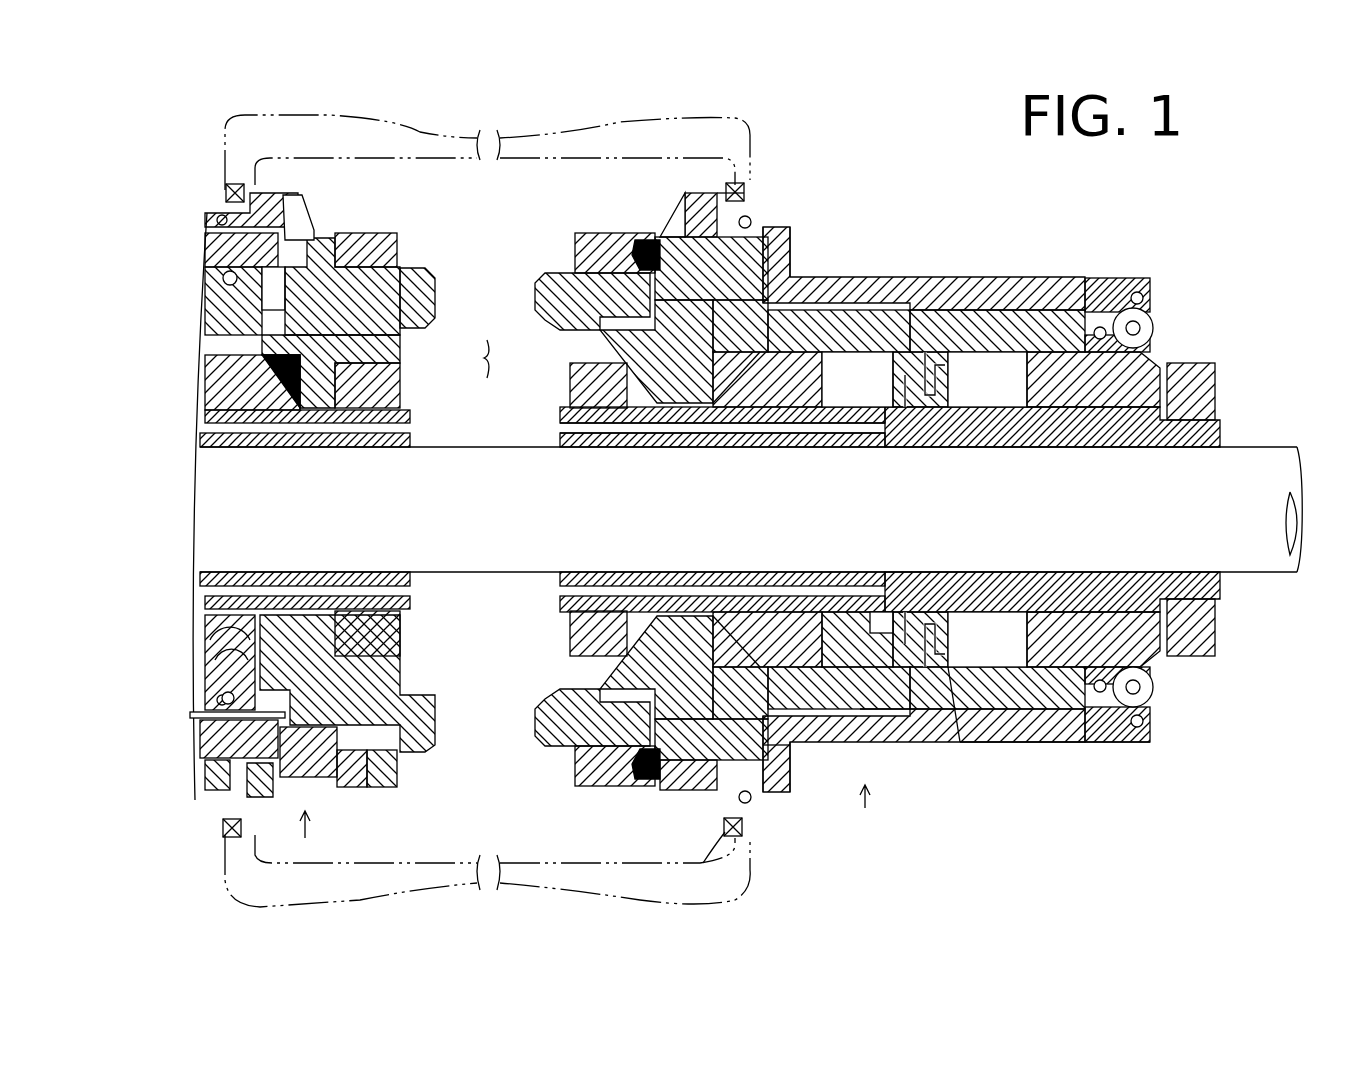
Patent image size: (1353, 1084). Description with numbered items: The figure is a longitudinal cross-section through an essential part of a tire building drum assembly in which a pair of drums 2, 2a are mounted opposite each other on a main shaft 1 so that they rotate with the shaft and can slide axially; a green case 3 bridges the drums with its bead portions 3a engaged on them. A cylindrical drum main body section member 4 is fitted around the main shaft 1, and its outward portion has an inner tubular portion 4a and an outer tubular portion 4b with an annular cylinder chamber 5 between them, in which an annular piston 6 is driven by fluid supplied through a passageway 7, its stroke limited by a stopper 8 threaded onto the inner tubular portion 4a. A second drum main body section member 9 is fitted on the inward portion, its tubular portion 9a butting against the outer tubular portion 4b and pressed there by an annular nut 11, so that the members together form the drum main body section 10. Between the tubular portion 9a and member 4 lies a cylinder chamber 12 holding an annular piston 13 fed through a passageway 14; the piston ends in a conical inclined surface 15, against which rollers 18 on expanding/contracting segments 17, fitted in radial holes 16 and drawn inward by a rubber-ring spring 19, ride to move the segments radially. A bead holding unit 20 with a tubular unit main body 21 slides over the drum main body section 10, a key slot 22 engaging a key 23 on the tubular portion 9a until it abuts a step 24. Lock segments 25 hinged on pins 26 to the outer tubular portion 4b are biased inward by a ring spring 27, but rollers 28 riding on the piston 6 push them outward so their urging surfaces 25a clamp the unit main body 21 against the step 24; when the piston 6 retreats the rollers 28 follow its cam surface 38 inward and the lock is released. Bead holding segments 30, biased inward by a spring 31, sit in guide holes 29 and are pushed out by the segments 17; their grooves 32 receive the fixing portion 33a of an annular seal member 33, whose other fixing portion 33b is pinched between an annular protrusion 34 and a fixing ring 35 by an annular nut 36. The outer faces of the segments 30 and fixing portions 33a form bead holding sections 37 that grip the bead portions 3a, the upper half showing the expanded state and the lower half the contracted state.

The main shaft 1 is at (1256, 572).
The drum 2 is at (864, 814).
The drum 2a is at (308, 841).
The green case 3 is at (590, 136).
The bead portion 3a is at (222, 196).
The drum main body section member 4 is at (560, 430).
The inner tubular portion 4a is at (985, 448).
The outer tubular portion 4b is at (1010, 330).
The cylinder chamber 5 is at (975, 392).
The piston 6 is at (1155, 360).
The passageway 7 is at (925, 428).
The stopper 8 is at (1218, 388).
The drum main body section member 9 is at (560, 330).
The tubular portion 9a is at (840, 326).
The drum main body section 10 is at (468, 359).
The annular nut 11 is at (600, 408).
The cylinder chamber 12 is at (840, 392).
The piston 13 is at (752, 405).
The passageway 14 is at (808, 428).
The inclined surface 15 is at (668, 404).
The holes 16 is at (798, 325).
The expanding/contracting segments 17 is at (778, 250).
The rollers 18 is at (720, 404).
The spring 19 is at (775, 770).
The bead holding unit 20 is at (940, 277).
The unit main body 21 is at (985, 731).
The key slot 22 is at (952, 742).
The key 23 is at (887, 727).
The step 24 is at (545, 746).
The lock segments 25 is at (1105, 285).
The urging surfaces 25a is at (1092, 715).
The pins 26 is at (1112, 757).
The spring 27 is at (1148, 724).
The rollers 28 is at (1156, 688).
The guide holes 29 is at (628, 350).
The bead holding segments 30 is at (752, 216).
The spring 31 is at (736, 838).
The grooves 32 is at (668, 238).
The seal member 33 is at (690, 200).
The fixing portion 33a is at (742, 184).
The fixing portion 33b is at (652, 246).
The annular protrusion 34 is at (545, 293).
The fixing ring 35 is at (640, 242).
The annular nut 36 is at (575, 251).
The bead holding sections 37 is at (235, 792).
The cam surface 38 is at (1205, 648).